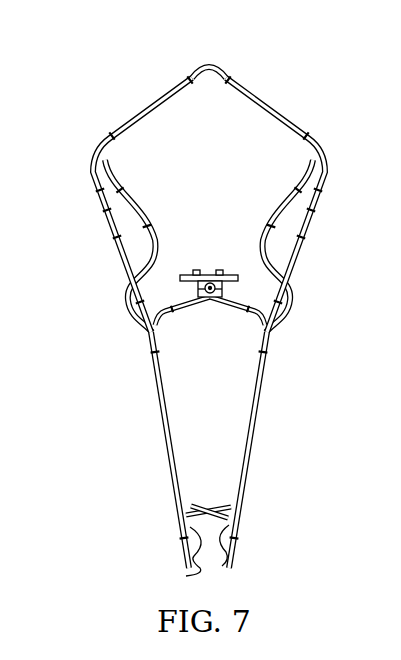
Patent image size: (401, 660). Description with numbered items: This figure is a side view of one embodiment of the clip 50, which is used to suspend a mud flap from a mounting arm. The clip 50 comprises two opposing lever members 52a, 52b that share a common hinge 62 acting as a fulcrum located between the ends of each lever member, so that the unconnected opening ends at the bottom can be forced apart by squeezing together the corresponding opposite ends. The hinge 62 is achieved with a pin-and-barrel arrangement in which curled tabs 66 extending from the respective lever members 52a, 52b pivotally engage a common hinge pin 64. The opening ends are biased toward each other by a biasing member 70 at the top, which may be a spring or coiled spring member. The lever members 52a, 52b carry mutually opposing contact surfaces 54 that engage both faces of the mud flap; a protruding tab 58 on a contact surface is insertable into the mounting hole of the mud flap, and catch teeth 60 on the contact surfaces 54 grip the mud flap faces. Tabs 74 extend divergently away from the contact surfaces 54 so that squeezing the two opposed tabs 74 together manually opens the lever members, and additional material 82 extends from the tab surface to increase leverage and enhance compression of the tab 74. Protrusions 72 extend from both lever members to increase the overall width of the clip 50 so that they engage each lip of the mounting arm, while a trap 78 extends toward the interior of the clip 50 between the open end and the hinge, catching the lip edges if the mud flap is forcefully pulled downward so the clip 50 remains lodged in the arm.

The clip 50 is at (138, 72).
The biasing member 70 is at (207, 62).
The tabs 74 is at (88, 170).
The additional material 82 is at (305, 238).
The trap 78 is at (148, 250).
The protrusions 72 is at (292, 298).
The hinge 62 is at (189, 232).
The hinge pin 64 is at (207, 283).
The curled tabs 66 is at (228, 312).
The contact surfaces 54 is at (181, 432).
The lever member 52a is at (168, 477).
The lever member 52b is at (260, 455).
The protruding tab 58 is at (222, 505).
The catch teeth 60 is at (186, 566).